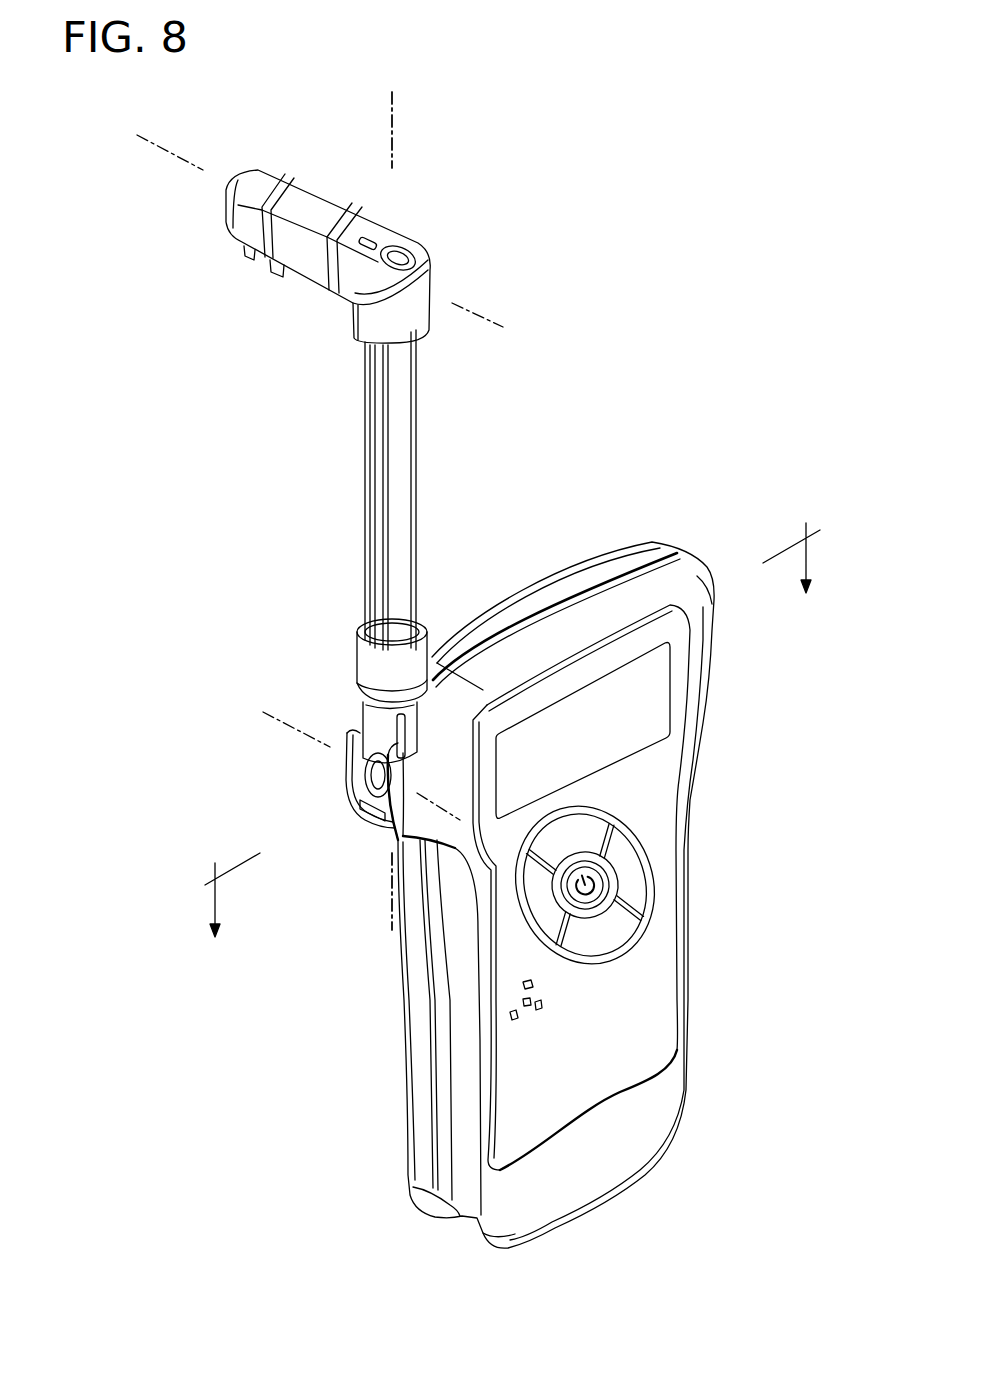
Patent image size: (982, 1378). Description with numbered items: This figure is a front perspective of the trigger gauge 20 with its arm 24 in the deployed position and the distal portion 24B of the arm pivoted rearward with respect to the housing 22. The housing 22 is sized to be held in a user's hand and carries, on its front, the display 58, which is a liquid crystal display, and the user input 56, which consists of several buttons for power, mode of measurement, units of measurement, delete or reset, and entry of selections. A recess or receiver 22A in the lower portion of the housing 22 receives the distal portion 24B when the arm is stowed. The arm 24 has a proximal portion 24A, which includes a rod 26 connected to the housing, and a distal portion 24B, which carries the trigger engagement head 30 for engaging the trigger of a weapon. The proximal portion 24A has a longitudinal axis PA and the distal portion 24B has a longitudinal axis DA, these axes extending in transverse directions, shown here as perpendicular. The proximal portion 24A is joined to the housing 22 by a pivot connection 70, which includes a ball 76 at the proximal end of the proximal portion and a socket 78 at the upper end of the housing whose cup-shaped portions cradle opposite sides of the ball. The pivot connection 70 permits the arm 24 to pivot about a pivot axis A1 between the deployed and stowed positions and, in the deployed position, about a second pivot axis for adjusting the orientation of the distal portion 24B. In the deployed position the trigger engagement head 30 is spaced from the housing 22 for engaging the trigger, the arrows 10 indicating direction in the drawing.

The measurement direction 10 is at (504, 712).
The trigger gauge 20 is at (567, 789).
The housing 22 is at (560, 858).
The recess or receiver 22A is at (483, 1236).
The arm 24 is at (401, 410).
The proximal portion 24A is at (451, 490).
The distal portion 24B is at (397, 210).
The rod 26 is at (405, 567).
The trigger engagement head 30 is at (349, 256).
The user input 56 is at (640, 928).
The display 58 is at (593, 687).
The pivot connection 70 is at (311, 767).
The ball 76 is at (372, 773).
The socket 78 is at (335, 838).
The pivot axis A1 is at (273, 718).
The longitudinal axis of the distal portion DA is at (150, 143).
The longitudinal axis of the proximal portion PA is at (392, 117).